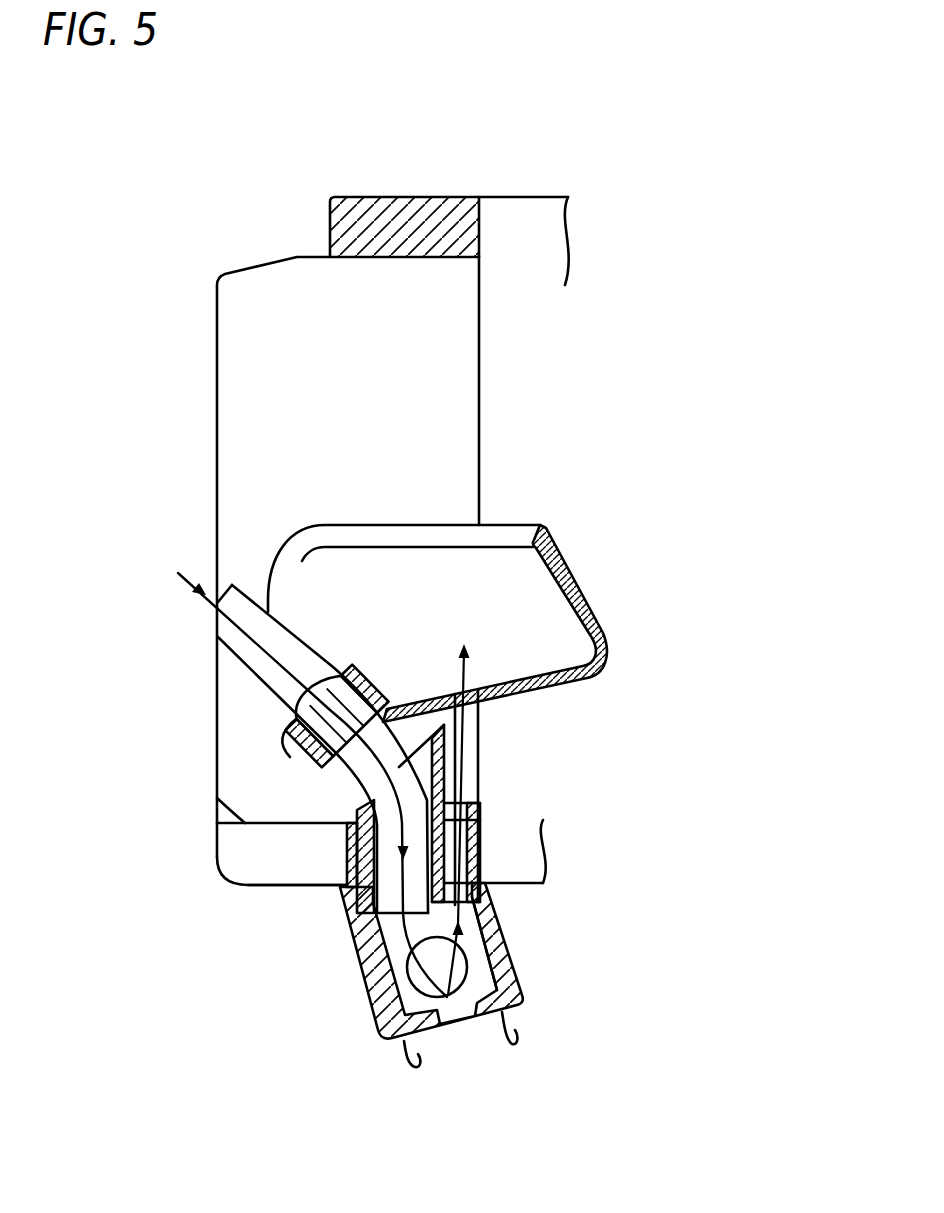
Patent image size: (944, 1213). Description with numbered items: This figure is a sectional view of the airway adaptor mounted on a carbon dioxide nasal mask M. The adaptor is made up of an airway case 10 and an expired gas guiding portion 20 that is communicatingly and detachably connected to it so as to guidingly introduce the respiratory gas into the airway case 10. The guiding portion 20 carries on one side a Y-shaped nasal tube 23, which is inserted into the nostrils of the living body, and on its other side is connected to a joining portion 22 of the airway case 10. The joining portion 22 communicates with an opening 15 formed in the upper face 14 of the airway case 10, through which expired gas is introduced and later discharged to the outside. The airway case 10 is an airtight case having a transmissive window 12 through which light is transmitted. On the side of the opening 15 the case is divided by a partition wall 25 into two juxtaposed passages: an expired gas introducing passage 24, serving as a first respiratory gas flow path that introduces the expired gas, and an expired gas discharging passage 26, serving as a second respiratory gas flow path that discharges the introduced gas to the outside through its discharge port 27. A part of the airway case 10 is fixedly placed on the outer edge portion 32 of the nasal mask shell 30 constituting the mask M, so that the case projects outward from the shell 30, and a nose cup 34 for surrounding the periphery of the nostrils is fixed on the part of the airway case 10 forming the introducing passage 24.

The airway case 10 is at (365, 1002).
The transmissive window 12 is at (467, 963).
The upper face 14 is at (483, 878).
The opening 15 is at (497, 913).
The expired gas guiding portion 20 is at (253, 677).
The joining portion 22 is at (347, 832).
The nasal tube 23 is at (243, 651).
The expired gas introducing passage 24 is at (383, 855).
The partition wall 25 is at (444, 753).
The expired gas discharging passage 26 is at (483, 833).
The discharge port 27 is at (467, 810).
The nasal mask shell 30 is at (230, 383).
The outer edge portion 32 is at (365, 198).
The nose cup 34 is at (580, 578).
The carbon dioxide nasal mask M is at (468, 174).